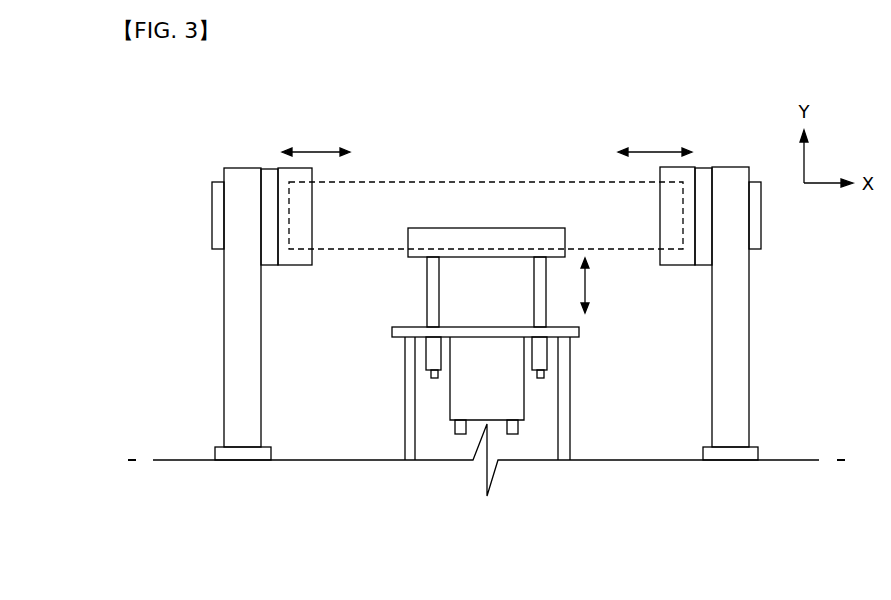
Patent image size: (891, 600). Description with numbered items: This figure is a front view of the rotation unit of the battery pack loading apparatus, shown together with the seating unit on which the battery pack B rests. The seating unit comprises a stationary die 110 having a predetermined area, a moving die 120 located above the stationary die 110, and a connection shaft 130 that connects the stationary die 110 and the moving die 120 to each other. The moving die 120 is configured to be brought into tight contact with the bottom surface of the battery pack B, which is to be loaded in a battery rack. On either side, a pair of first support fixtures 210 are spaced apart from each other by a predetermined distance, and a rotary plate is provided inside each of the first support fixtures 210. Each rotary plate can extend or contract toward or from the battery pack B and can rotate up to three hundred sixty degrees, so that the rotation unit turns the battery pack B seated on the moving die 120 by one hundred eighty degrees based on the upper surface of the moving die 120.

The stationary die 110 is at (579, 332).
The moving die 120 is at (458, 235).
The connection shaft 130 is at (433, 305).
The first support fixture 210 is at (243, 178).
The battery pack B is at (515, 190).